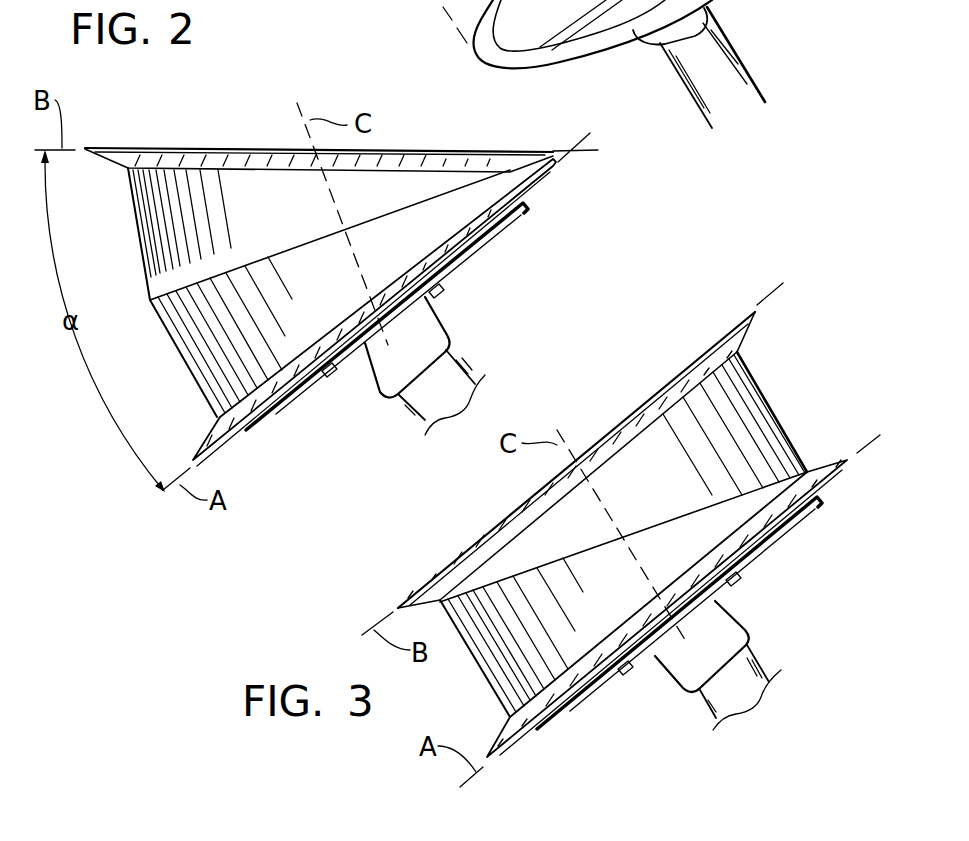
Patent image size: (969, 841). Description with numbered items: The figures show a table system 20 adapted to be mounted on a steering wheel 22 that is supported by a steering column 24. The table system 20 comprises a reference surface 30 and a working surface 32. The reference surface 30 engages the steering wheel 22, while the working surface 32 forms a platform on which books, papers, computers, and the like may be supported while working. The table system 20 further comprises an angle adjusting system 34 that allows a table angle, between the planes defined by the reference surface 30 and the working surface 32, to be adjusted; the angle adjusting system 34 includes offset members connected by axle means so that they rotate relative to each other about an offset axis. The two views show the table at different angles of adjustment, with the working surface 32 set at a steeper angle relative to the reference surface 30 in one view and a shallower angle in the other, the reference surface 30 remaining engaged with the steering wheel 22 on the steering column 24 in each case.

In FIG. 2, the table system 20 is at (320, 284).
In FIG. 3, the table system 20 is at (639, 521).
In FIG. 2, the steering wheel 22 is at (467, 243).
In FIG. 3, the steering wheel 22 is at (767, 551).
In FIG. 2, the steering column 24 is at (455, 372).
In FIG. 3, the steering column 24 is at (752, 668).
In FIG. 2, the reference surface 30 is at (222, 440).
In FIG. 3, the reference surface 30 is at (828, 480).
In FIG. 2, the working surface 32 is at (195, 147).
In FIG. 3, the working surface 32 is at (640, 404).
In FIG. 2, the angle adjusting system 34 is at (153, 333).
In FIG. 3, the angle adjusting system 34 is at (780, 392).